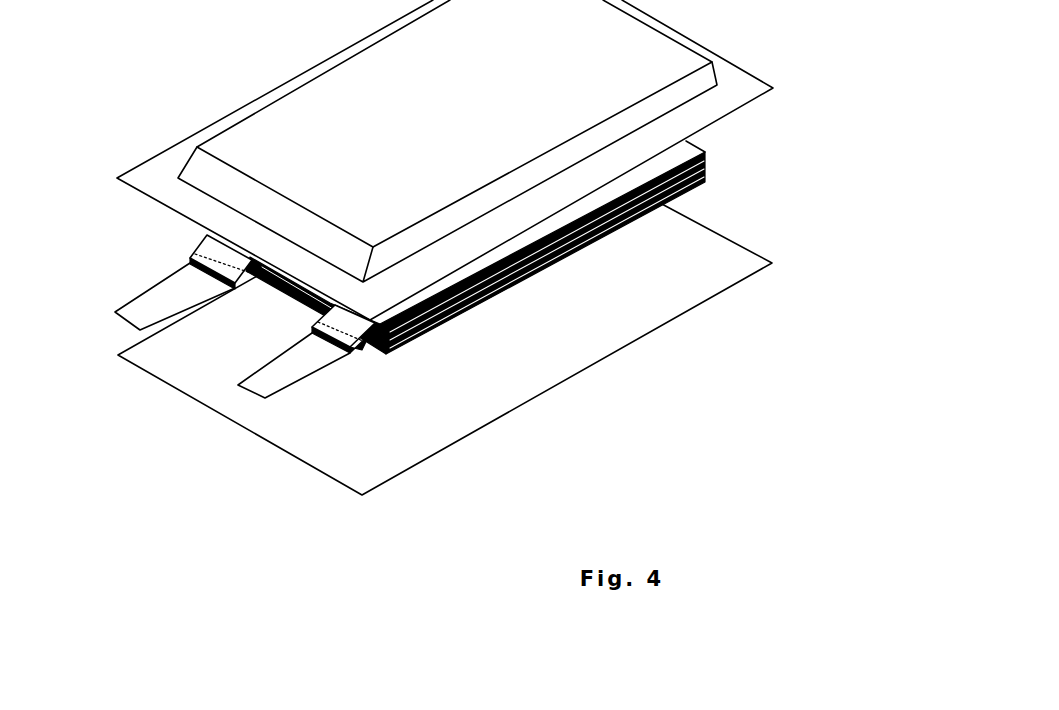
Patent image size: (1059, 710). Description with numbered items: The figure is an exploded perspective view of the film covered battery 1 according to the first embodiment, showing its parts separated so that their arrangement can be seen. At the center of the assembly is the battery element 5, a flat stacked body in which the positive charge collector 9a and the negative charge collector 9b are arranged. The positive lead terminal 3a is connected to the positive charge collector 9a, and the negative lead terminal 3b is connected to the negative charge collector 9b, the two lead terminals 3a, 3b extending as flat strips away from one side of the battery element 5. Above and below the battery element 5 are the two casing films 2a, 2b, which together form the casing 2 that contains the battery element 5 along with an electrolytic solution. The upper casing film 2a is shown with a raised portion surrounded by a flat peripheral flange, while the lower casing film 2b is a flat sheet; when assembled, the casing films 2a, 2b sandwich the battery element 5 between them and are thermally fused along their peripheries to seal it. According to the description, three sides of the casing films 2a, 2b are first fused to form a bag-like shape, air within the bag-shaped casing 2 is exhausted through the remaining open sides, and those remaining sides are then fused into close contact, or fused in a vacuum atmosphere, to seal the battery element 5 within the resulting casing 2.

The film covered battery 1 is at (118, 132).
The casing 2 is at (801, 147).
The casing film 2a is at (730, 100).
The casing film 2b is at (718, 245).
The battery element 5 is at (550, 262).
The positive charge collector 9a is at (352, 340).
The negative charge collector 9b is at (196, 256).
The positive lead terminal 3a is at (263, 388).
The negative lead terminal 3b is at (137, 320).